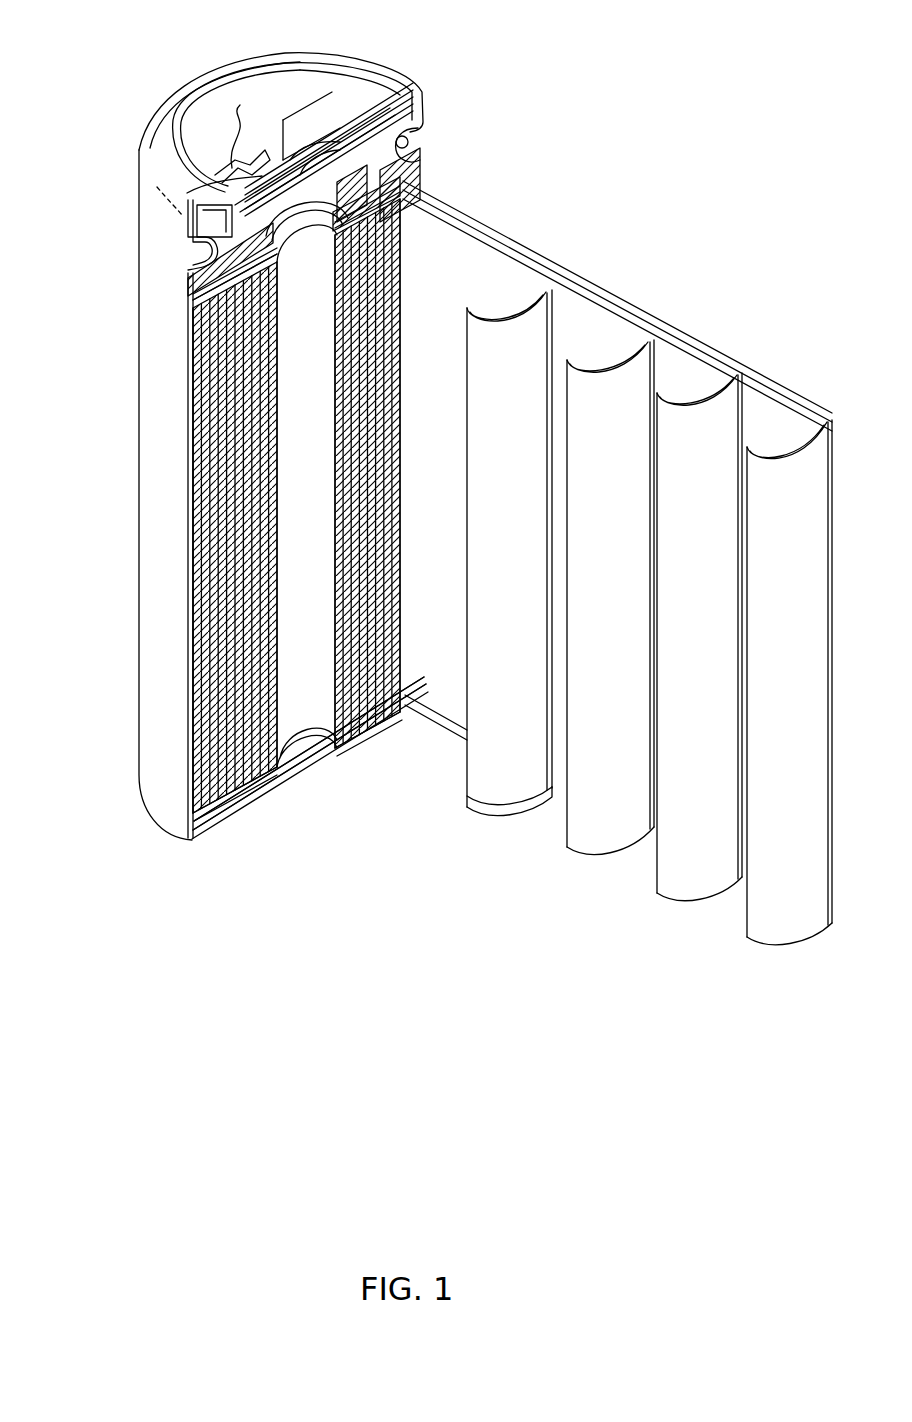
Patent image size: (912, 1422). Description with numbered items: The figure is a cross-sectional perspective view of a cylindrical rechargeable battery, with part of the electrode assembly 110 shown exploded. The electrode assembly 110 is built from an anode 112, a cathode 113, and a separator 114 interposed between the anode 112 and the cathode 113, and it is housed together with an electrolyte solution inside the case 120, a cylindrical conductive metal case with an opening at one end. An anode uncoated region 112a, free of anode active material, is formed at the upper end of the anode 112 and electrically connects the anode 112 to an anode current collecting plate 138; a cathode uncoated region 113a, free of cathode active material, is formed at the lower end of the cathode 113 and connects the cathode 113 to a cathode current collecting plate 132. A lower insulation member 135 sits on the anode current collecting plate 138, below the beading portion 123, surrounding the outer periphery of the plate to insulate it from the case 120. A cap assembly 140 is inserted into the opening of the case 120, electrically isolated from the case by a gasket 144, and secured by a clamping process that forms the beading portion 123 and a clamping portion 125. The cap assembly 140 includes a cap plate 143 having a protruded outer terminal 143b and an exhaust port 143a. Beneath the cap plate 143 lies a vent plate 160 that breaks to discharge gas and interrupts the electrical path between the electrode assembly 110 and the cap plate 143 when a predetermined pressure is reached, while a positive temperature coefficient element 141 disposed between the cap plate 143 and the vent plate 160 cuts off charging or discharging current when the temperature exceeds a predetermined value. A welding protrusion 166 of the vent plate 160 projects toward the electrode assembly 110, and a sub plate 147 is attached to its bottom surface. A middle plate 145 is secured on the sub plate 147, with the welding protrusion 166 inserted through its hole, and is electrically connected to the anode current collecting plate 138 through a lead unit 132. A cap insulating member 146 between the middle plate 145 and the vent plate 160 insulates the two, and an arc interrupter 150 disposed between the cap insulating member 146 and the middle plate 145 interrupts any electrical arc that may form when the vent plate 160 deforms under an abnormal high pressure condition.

The electrode assembly 110 is at (370, 712).
The anode 112 is at (694, 899).
The anode uncoated region 112a is at (703, 354).
The cathode 113 is at (464, 779).
The cathode uncoated region 113a is at (508, 816).
The separator 114 is at (598, 845).
The case 120 is at (140, 436).
The beading portion 123 is at (205, 262).
The clamping portion 125 is at (175, 236).
The cathode current collecting plate 132 is at (254, 803).
The lower insulation member 135 is at (195, 290).
The anode current collecting plate 138 is at (200, 310).
The cap assembly 140 is at (309, 116).
The positive temperature coefficient element 141 is at (415, 97).
The cap plate 143 is at (363, 95).
The exhaust port 143a is at (226, 147).
The protruded outer terminal 143b is at (262, 124).
The gasket 144 is at (412, 135).
The middle plate 145 is at (420, 163).
The cap insulating member 146 is at (408, 142).
The sub plate 147 is at (420, 180).
The arc interrupter 150 is at (187, 193).
The vent plate 160 is at (425, 125).
The welding protrusion 166 is at (295, 168).